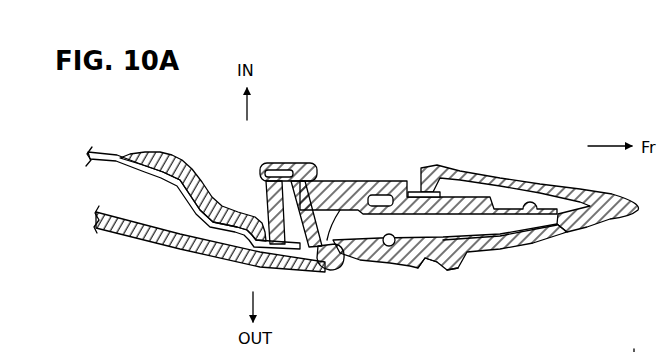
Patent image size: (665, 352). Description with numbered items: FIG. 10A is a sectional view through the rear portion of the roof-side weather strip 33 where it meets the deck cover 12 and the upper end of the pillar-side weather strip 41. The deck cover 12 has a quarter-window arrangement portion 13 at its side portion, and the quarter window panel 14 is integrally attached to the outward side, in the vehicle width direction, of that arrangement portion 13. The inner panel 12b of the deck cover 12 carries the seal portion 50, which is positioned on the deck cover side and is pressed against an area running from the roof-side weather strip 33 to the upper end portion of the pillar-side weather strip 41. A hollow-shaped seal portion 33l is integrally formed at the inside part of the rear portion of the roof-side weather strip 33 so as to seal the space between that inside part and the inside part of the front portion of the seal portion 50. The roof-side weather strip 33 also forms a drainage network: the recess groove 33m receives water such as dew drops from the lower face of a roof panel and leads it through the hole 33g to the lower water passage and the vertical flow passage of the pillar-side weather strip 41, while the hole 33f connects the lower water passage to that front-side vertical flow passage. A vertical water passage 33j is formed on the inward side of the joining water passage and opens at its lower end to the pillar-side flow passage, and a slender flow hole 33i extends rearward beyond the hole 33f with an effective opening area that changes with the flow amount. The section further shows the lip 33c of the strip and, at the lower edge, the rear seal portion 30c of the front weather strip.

The deck cover 12 is at (110, 247).
The inner panel 12b is at (113, 165).
The quarter-window arrangement portion 13 is at (163, 246).
The quarter window panel 14 is at (322, 268).
The rear seal portion 30c is at (633, 341).
The roof-side weather strip 33 is at (383, 176).
The clip lower arm 33c is at (513, 232).
The hole 33f is at (411, 255).
The hole 33g is at (434, 191).
The flow hole 33i is at (355, 258).
The vertical water passage 33j is at (377, 198).
The hollow-shaped seal portion 33l is at (275, 162).
The recess groove 33m is at (503, 186).
The pillar-side weather strip 41 is at (407, 272).
The seal portion 50 is at (164, 154).